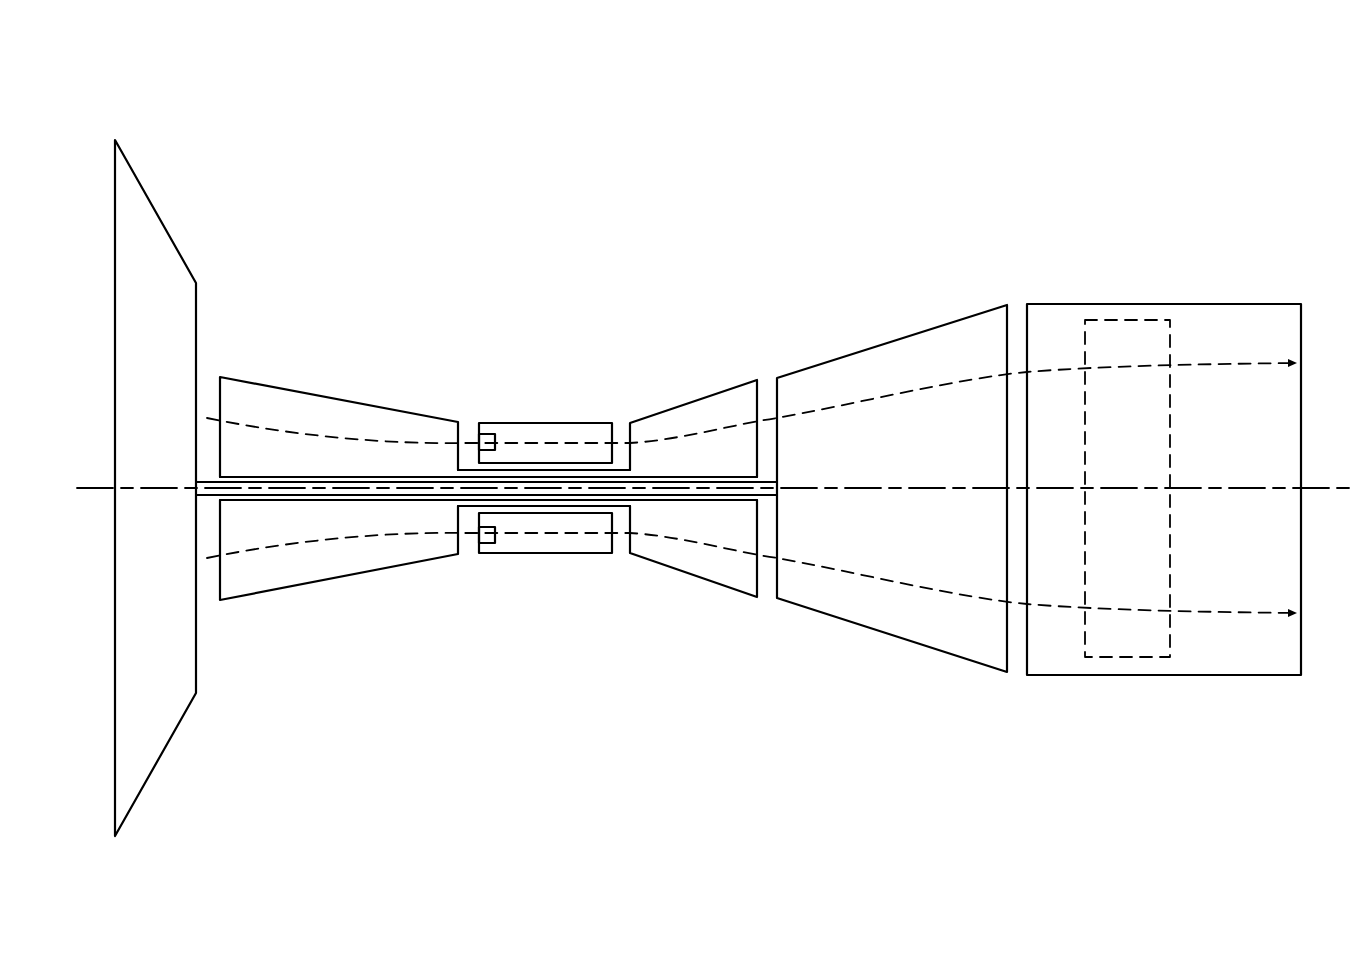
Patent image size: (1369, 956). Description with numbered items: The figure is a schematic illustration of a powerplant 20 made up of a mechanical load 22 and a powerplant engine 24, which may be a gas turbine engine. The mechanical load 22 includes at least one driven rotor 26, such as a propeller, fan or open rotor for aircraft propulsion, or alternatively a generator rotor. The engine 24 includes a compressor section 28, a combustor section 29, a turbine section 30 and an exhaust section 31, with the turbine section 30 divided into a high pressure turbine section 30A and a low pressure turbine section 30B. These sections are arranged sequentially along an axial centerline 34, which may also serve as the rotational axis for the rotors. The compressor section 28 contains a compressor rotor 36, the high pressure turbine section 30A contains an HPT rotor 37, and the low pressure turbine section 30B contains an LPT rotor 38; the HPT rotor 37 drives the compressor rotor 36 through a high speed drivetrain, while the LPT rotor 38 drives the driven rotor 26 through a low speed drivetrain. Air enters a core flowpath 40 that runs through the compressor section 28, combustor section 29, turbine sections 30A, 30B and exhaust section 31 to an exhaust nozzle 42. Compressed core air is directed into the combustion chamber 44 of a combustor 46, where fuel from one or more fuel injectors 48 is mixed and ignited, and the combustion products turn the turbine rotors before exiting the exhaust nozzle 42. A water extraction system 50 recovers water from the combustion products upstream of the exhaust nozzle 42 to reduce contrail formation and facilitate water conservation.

The powerplant 20 is at (118, 60).
The mechanical load 22 is at (176, 144).
The powerplant engine 24 is at (845, 185).
The driven rotor 26 is at (113, 300).
The compressor section 28 is at (349, 338).
The combustor section 29 is at (557, 348).
The turbine section 30 is at (852, 258).
The high pressure turbine section 30A is at (687, 338).
The low pressure turbine section 30B is at (833, 335).
The exhaust section 31 is at (1134, 278).
The axial centerline 34 is at (93, 490).
The compressor rotor 36 is at (293, 386).
The HPT rotor 37 is at (651, 416).
The LPT rotor 38 is at (801, 372).
The core flowpath 40 is at (399, 440).
The exhaust nozzle 42 is at (1302, 318).
The combustion chamber 44 is at (570, 434).
The combustor 46 is at (529, 422).
The fuel injector 48 is at (487, 424).
The water extraction system 50 is at (1119, 663).